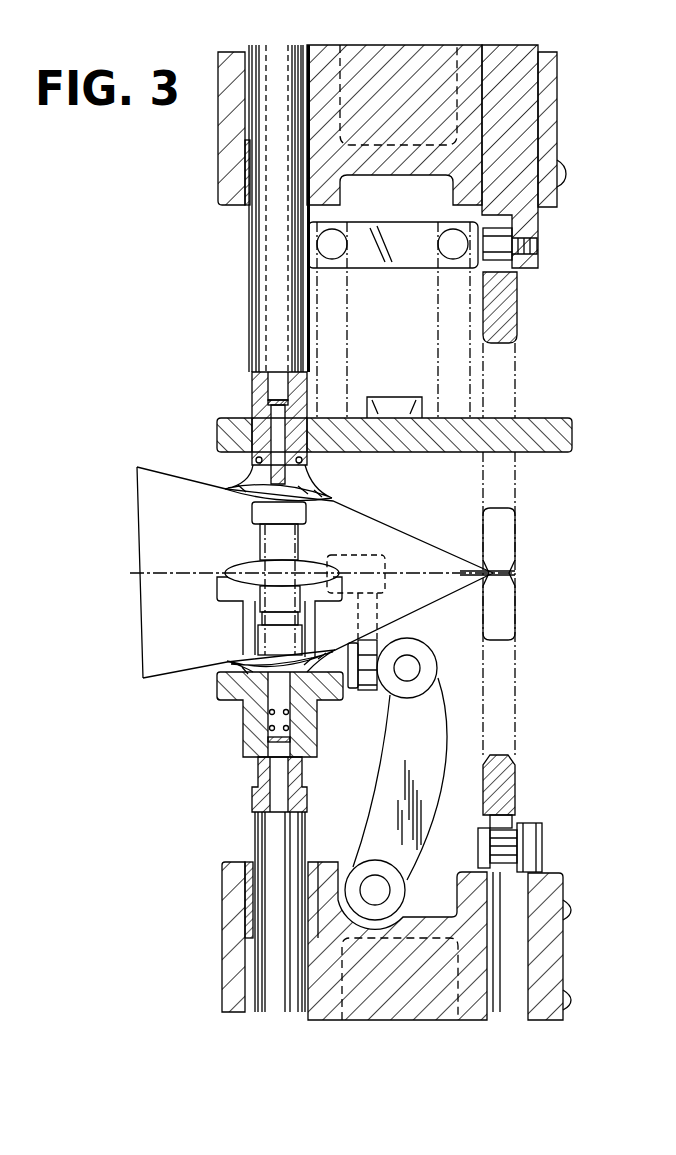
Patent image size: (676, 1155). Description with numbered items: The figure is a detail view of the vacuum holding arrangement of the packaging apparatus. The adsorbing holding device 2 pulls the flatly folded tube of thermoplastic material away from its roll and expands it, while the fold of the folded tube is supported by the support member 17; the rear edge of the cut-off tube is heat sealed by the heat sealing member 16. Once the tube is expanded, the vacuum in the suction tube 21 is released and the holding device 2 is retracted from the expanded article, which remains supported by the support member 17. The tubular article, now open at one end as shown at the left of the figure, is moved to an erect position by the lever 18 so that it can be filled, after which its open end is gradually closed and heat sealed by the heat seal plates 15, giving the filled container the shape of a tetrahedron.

The holding device 2 is at (314, 490).
The heat seal plates 15 is at (527, 418).
The heat sealing member 16 is at (517, 300).
The support member 17 is at (372, 638).
The lever 18 is at (404, 726).
The suction tube 21 is at (283, 777).